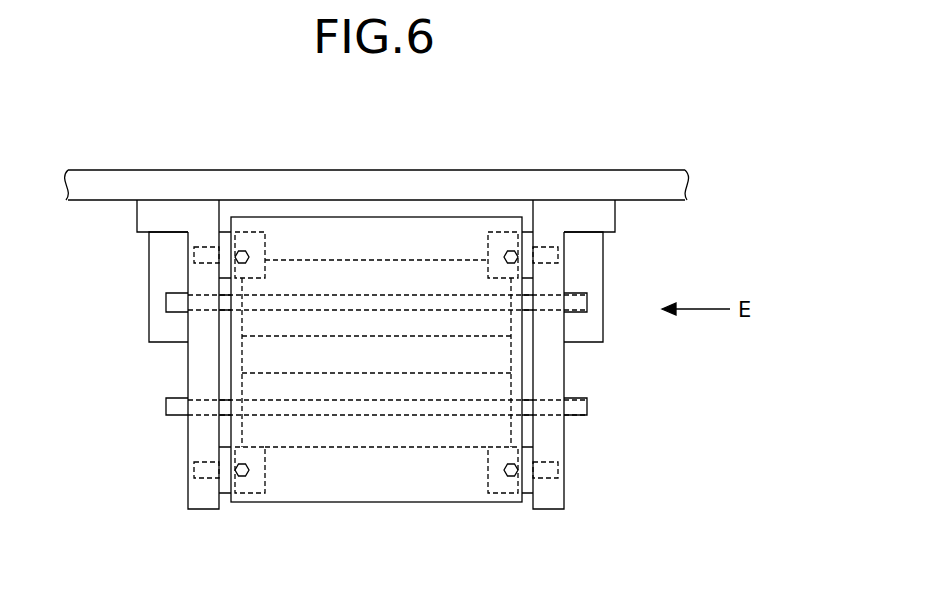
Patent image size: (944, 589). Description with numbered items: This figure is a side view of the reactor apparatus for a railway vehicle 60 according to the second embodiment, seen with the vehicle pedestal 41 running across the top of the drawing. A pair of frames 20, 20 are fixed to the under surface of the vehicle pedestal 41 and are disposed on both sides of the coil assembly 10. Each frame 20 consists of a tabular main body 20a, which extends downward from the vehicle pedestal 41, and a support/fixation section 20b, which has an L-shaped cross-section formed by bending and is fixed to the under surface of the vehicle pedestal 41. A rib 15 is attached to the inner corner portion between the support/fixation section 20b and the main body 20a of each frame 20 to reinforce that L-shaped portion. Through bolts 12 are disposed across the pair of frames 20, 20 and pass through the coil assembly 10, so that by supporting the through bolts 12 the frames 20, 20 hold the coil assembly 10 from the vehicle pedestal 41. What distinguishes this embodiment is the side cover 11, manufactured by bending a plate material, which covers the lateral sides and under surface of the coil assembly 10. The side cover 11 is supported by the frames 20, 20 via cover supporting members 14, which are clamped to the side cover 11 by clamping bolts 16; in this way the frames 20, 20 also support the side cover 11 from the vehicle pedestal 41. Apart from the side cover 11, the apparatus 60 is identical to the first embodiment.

The coil assembly 10 is at (373, 450).
The side cover 11 is at (420, 482).
The through bolt 12 is at (577, 293).
The cover supporting member 14 is at (240, 232).
The rib 15 is at (149, 286).
The clamping bolt 16 is at (248, 255).
The frame 20 is at (180, 371).
The main body 20a is at (188, 450).
The support/fixation section 20b is at (137, 218).
The vehicle pedestal 41 is at (582, 169).
The reactor apparatus for a railway vehicle 60 is at (391, 152).